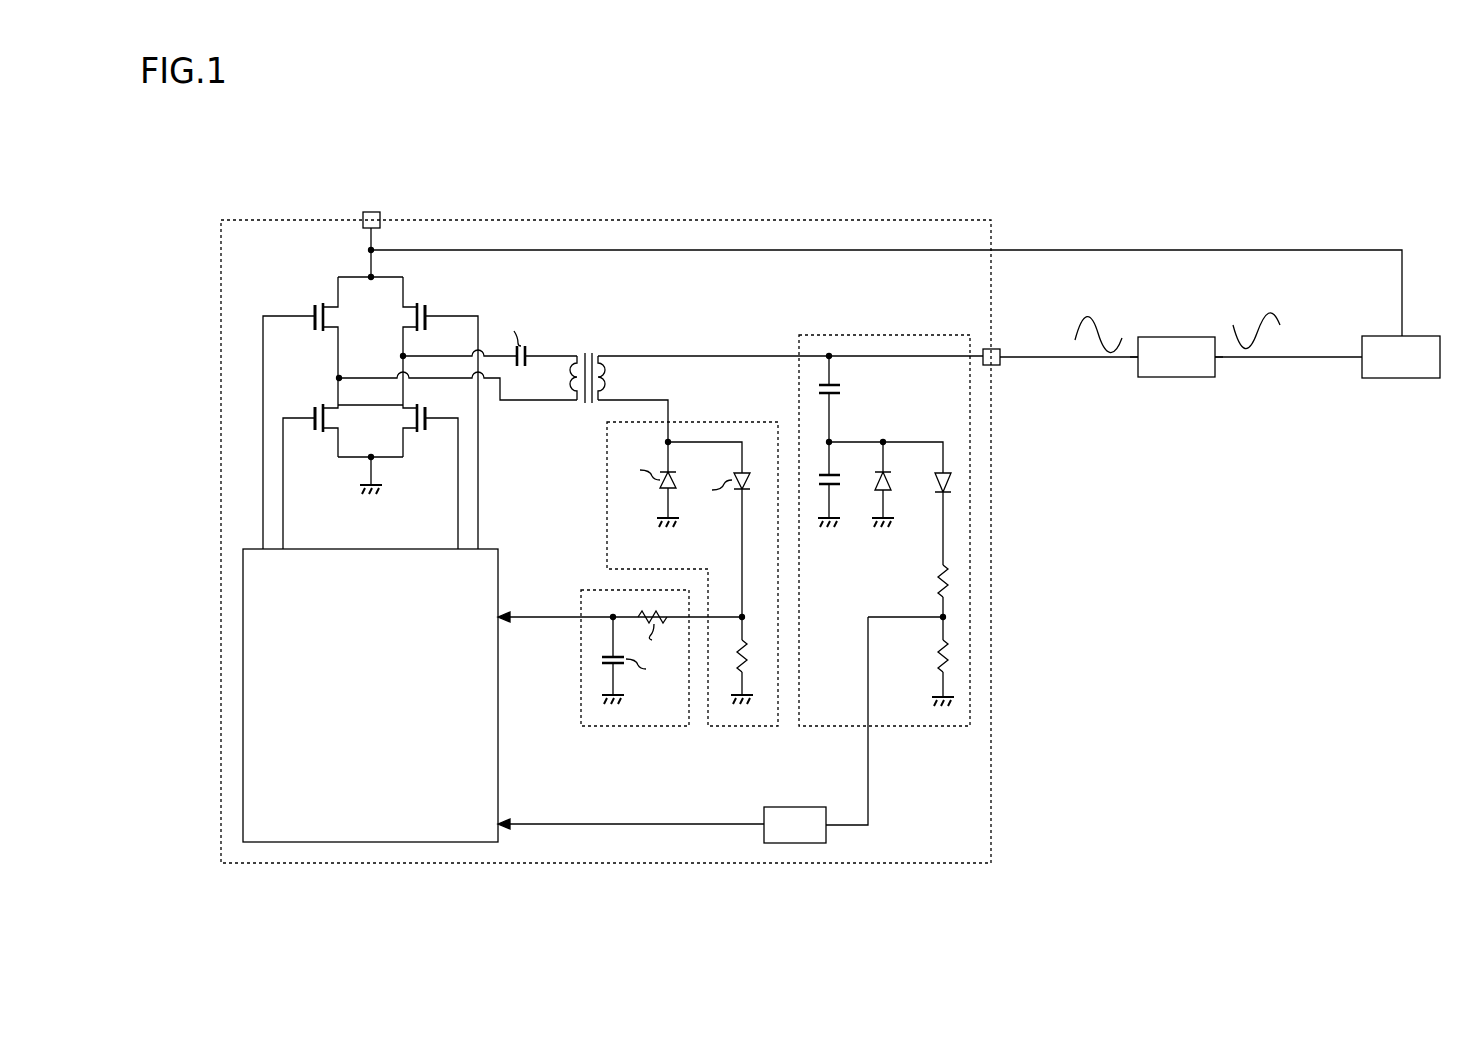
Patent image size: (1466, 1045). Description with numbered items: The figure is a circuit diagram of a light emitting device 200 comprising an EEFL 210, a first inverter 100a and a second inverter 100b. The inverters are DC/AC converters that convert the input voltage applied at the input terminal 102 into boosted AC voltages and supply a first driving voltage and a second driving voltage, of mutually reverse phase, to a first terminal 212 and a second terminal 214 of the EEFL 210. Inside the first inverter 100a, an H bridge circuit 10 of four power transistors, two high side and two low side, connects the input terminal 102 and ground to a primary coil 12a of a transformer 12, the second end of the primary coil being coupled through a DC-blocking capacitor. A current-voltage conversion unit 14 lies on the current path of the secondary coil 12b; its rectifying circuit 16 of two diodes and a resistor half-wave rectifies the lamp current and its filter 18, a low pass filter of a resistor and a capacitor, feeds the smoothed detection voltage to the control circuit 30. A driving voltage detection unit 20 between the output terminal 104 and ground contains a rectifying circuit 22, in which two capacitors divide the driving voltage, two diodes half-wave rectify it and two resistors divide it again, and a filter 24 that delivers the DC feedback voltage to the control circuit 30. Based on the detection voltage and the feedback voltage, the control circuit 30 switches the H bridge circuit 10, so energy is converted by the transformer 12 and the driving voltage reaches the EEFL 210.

The H bridge circuit 10 is at (300, 497).
The transformer 12 is at (588, 339).
The primary coil 12a is at (574, 355).
The secondary coil 12b is at (616, 356).
The current-voltage conversion unit 14 is at (638, 615).
The rectifying circuit 16 is at (743, 727).
The filter 18 is at (635, 679).
The driving voltage detection unit 20 is at (734, 589).
The rectifying circuit 22 is at (893, 727).
The filter 24 is at (846, 825).
The control circuit 30 is at (498, 549).
The first inverter 100a is at (606, 864).
The second inverter 100b is at (1400, 378).
The input terminal 102 is at (378, 211).
The output terminal 104 is at (1000, 366).
The light emitting device 200 is at (858, 938).
The EEFL 210 is at (1178, 378).
The first terminal 212 is at (1135, 362).
The second terminal 214 is at (1218, 362).